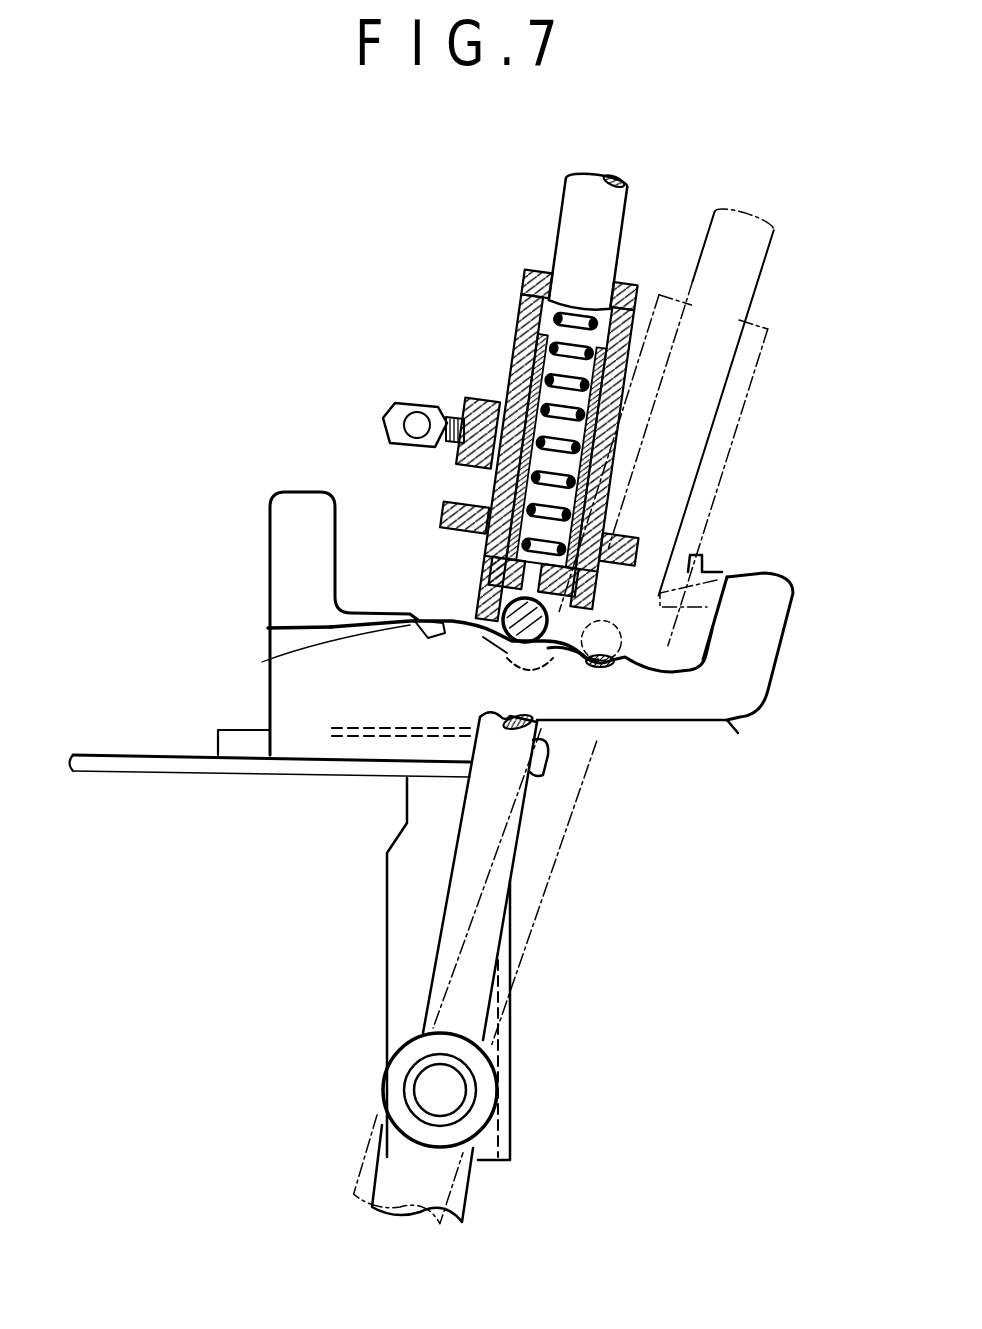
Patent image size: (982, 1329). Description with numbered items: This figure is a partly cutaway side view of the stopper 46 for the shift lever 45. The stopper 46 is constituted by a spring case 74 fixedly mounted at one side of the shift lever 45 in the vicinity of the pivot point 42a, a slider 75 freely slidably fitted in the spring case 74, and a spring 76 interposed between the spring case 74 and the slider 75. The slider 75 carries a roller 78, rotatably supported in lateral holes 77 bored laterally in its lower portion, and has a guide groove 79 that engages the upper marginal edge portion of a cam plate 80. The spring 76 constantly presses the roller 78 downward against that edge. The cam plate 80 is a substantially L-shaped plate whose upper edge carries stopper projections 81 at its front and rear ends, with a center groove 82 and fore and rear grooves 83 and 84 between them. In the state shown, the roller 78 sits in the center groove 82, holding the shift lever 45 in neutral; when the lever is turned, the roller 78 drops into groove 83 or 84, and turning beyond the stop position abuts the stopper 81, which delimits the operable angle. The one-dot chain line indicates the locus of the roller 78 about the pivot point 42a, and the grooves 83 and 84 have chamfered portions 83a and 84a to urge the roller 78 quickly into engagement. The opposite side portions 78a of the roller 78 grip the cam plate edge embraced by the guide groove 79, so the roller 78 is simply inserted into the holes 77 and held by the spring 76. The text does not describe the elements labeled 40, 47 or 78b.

The base plate 40 is at (132, 777).
The pivot point 42a is at (384, 1083).
The shift lever 45 is at (588, 239).
The stopper 46 is at (535, 481).
The swing arm 47 is at (473, 1190).
The spring case 74 is at (537, 442).
The slider 75 is at (556, 451).
The spring 76 is at (559, 434).
The lateral holes 77 is at (562, 615).
The roller 78 is at (536, 553).
The side portions of the roller 78a is at (540, 662).
The holder lug 78b is at (495, 637).
The guide groove 79 is at (525, 620).
The cam plate 80 is at (502, 572).
The stopper projections 81 is at (290, 490).
The center groove 82 is at (522, 645).
The fore groove 83 is at (653, 660).
The chamfered portion 83a is at (548, 652).
The rear groove 84 is at (409, 578).
The chamfered portion 84a is at (270, 628).